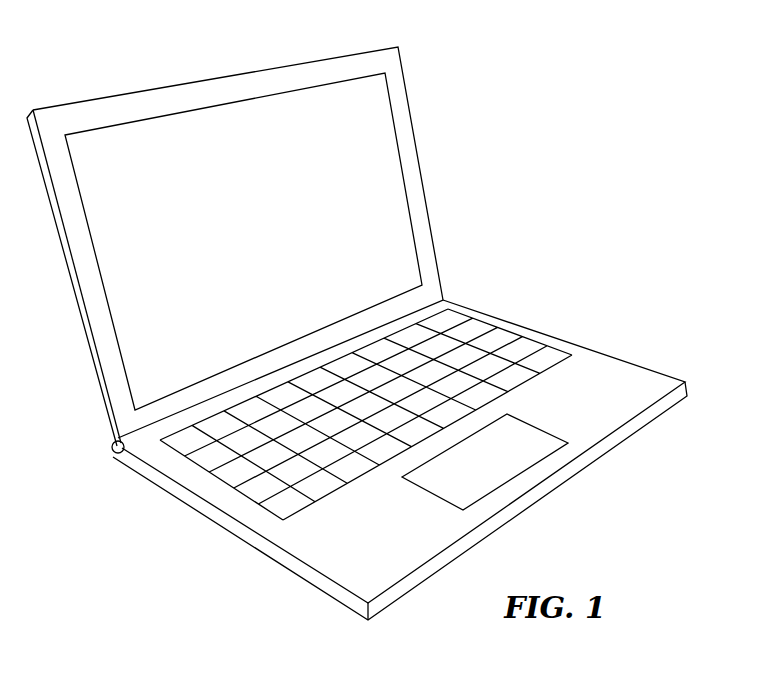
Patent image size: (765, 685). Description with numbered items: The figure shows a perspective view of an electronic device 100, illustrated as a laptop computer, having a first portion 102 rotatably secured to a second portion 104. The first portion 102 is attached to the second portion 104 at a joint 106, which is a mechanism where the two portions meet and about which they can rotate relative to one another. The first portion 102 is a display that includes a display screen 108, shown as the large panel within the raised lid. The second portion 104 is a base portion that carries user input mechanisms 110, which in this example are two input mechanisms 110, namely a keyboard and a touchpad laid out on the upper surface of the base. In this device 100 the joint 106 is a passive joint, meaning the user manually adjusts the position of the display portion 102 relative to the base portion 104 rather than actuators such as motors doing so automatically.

The electronic device 100 is at (582, 131).
The first portion 102 is at (408, 137).
The second portion 104 is at (620, 366).
The joint 106 is at (112, 449).
The display screen 108 is at (388, 236).
The user input mechanisms 110 is at (495, 332).